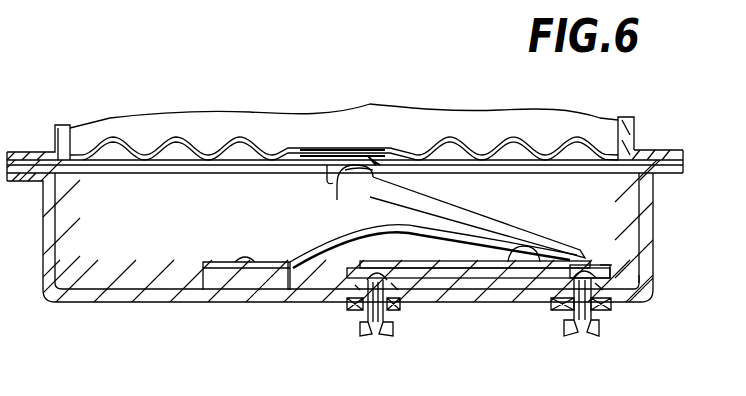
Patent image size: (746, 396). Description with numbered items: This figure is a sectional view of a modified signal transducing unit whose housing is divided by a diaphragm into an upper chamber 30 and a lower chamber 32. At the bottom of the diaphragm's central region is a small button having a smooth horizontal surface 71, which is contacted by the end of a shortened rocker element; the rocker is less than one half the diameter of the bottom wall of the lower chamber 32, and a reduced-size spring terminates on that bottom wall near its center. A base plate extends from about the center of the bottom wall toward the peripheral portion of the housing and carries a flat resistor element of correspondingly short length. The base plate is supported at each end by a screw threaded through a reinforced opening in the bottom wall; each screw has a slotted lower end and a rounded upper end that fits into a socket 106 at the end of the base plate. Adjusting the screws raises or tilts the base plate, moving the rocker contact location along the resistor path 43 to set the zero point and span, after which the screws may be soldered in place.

The upper chamber 30 is at (545, 122).
The lower chamber 32 is at (598, 200).
The tray rim 43 is at (654, 277).
The smooth horizontal surface 71 is at (375, 173).
The socket 106 is at (360, 283).